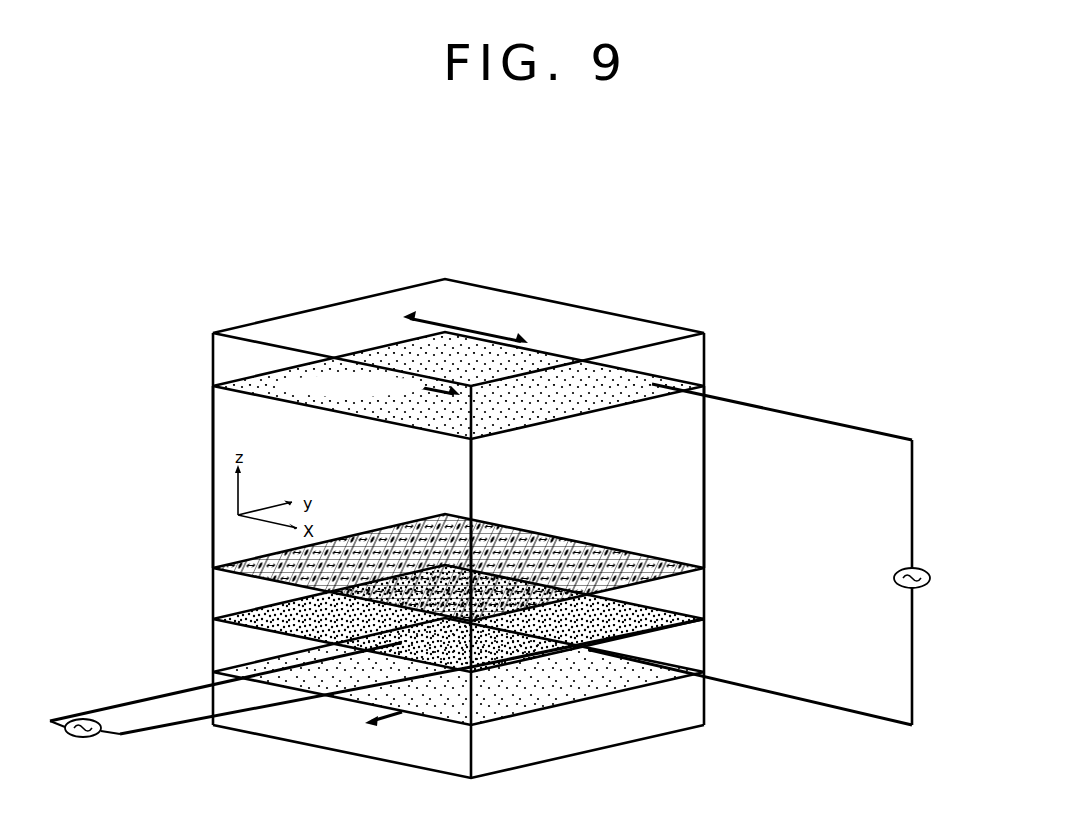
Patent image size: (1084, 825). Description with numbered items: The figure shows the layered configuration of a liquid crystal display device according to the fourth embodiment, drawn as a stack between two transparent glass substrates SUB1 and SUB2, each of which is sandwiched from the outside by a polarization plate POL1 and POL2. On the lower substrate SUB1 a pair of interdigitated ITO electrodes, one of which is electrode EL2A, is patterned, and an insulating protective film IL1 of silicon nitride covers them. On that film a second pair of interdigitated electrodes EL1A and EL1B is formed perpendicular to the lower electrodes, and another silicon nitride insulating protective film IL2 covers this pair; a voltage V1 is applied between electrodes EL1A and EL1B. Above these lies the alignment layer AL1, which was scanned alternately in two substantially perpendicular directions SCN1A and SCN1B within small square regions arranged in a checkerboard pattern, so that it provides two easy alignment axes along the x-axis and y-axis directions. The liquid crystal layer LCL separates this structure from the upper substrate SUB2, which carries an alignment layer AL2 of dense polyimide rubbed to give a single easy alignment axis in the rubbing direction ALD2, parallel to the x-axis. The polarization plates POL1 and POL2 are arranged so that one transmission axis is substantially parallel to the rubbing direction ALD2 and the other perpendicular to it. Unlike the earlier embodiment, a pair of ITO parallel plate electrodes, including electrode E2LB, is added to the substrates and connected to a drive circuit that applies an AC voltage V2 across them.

The substrate SUB2 is at (213, 333).
The polarization plate POL2 is at (489, 333).
The rubbing direction ALD2 is at (240, 381).
The alignment layer AL2 is at (617, 397).
The liquid crystal layer LCL is at (235, 422).
The parallel plate electrode E2LB is at (680, 385).
The AC voltage V2 is at (928, 582).
The alignment layer AL1 is at (695, 573).
The scanning direction SCN1A is at (655, 584).
The scanning direction SCN1B is at (660, 592).
The insulating protective film IL2 is at (265, 610).
The interdigitated electrode EL1A is at (277, 617).
The interdigitated electrode EL1B is at (662, 620).
The insulating protective film IL1 is at (213, 655).
The interdigitated electrode EL2A is at (625, 668).
The substrate SUB1 is at (515, 748).
The polarization plate POL1 is at (392, 720).
The voltage V1 is at (85, 741).